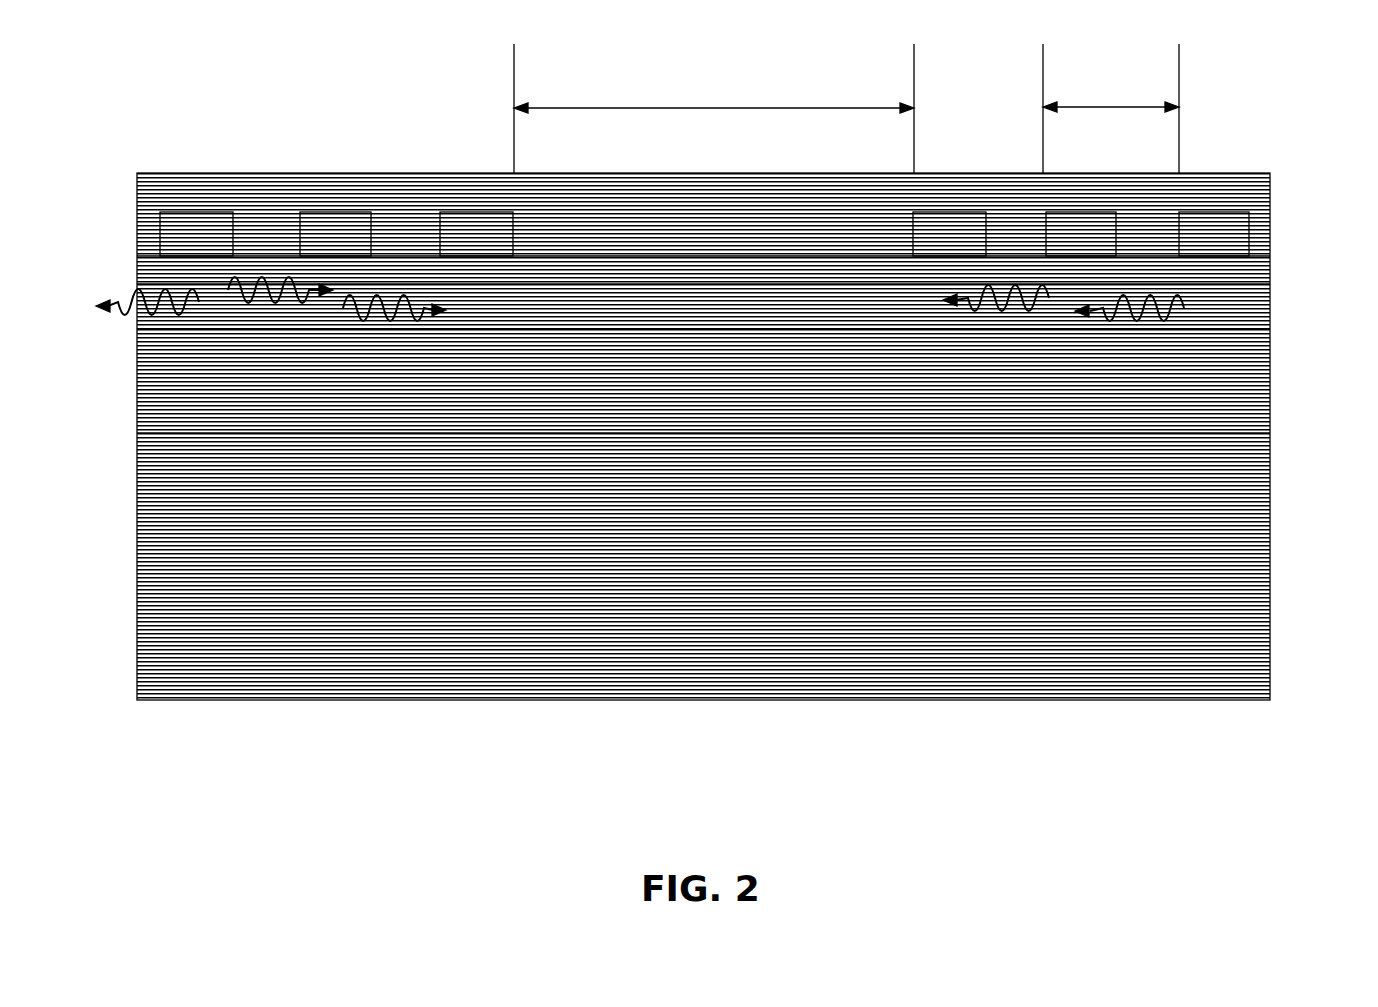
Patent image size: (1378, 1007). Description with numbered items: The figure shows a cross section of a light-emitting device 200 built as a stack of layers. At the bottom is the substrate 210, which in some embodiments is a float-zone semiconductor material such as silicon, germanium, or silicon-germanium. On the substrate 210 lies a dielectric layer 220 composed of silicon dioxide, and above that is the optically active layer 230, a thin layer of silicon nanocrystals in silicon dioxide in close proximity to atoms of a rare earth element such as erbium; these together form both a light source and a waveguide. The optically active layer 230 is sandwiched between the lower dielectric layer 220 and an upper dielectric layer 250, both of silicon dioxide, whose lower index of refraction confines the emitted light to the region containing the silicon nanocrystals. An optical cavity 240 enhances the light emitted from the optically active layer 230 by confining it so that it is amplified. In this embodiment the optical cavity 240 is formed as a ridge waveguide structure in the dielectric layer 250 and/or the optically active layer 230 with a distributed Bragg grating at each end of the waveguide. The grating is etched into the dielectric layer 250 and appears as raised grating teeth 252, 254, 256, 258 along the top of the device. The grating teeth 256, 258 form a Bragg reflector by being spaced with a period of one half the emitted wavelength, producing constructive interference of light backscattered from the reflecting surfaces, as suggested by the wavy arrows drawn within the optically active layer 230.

The light-emitting device 200 is at (520, 749).
The substrate 210 is at (1262, 523).
The dielectric layer 220 is at (1262, 398).
The optically active layer 230 is at (1262, 310).
The optical cavity 240 is at (846, 108).
The dielectric layer 250 is at (1262, 262).
The grating tooth 252 is at (463, 204).
The grating tooth 254 is at (922, 204).
The grating tooth 256 is at (1021, 204).
The grating tooth 258 is at (1230, 203).